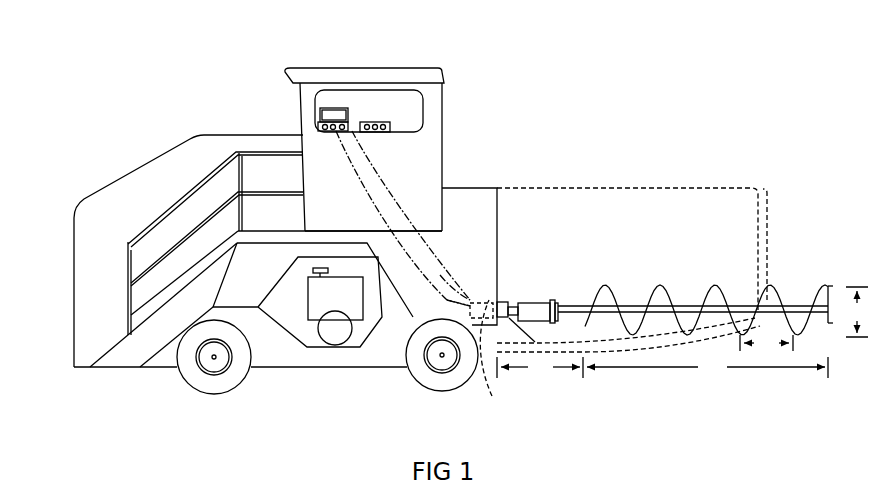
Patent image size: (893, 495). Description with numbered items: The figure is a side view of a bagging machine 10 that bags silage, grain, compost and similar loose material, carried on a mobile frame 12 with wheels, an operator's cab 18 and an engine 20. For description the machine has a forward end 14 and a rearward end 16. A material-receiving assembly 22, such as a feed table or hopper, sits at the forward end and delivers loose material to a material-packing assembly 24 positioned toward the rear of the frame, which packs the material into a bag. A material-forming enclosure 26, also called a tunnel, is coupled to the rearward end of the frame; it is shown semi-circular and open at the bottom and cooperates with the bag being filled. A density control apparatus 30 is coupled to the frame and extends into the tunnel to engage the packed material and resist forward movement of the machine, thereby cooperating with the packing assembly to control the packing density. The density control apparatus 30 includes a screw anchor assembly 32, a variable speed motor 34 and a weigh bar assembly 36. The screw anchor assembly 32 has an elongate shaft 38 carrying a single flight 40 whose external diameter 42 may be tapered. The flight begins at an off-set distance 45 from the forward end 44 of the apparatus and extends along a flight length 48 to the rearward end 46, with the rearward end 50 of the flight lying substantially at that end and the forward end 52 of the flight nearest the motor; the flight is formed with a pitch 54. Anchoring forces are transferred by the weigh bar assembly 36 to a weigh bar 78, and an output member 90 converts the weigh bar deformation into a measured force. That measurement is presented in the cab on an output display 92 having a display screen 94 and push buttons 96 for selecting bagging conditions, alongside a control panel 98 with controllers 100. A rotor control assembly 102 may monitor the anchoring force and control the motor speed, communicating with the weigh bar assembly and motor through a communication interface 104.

The bagging machine 10 is at (182, 61).
The mobile frame 12 is at (149, 381).
The forward end 14 is at (49, 262).
The rearward end 16 is at (818, 208).
The operator's cab 18 is at (449, 100).
The engine 20 is at (337, 340).
The material-receiving assembly 22 is at (89, 334).
The material-packing assembly 24 is at (459, 218).
The material-forming enclosure 26 is at (684, 185).
The density control apparatus 30 is at (585, 284).
The screw anchor assembly 32 is at (685, 293).
The variable speed motor 34 is at (535, 310).
The weigh bar assembly 36 is at (508, 298).
The elongate shaft 38 is at (575, 318).
The flight 40 is at (773, 288).
The external diameter 42 is at (857, 312).
The forward end of the density control apparatus 44 is at (508, 282).
The off-set distance 45 is at (540, 367).
The rearward end of the density control apparatus 46 is at (834, 297).
The flight length 48 is at (707, 367).
The rearward end of the flight 50 is at (828, 327).
The forward end of the flight 52 is at (592, 297).
The pitch 54 is at (766, 343).
The weigh bar 78 is at (492, 356).
The output member 90 is at (506, 276).
The output display 92 is at (352, 112).
The display screen 94 is at (338, 110).
The push buttons 96 is at (348, 125).
The control panel 98 is at (390, 116).
The controllers 100 is at (384, 132).
The rotor control assembly 102 is at (462, 270).
The communication interface 104 is at (456, 276).